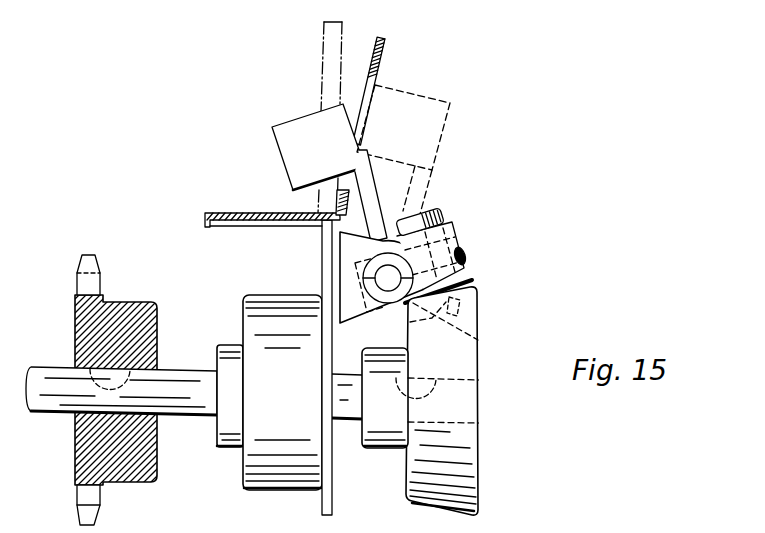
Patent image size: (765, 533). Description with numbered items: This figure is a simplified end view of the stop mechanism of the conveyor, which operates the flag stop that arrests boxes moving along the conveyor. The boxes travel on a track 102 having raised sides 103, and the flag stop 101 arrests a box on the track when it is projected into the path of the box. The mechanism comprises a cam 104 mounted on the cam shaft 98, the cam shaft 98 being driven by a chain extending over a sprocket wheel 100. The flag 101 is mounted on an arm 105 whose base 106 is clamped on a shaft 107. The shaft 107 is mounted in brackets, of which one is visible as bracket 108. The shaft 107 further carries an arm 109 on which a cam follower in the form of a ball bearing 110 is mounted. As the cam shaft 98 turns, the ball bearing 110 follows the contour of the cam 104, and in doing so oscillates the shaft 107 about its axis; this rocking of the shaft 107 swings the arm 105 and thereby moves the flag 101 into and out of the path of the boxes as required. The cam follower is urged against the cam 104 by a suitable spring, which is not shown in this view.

The cam shaft 98 is at (184, 416).
The sprocket wheel 100 is at (78, 461).
The flag stop 101 is at (285, 142).
The track 102 is at (226, 214).
The raised sides 103 is at (381, 60).
The cam 104 is at (473, 438).
The arm 105 is at (367, 193).
The base 106 is at (443, 227).
The shaft 107 is at (388, 292).
The bracket 108 is at (357, 318).
The arm 109 is at (463, 271).
The ball bearing 110 is at (471, 281).